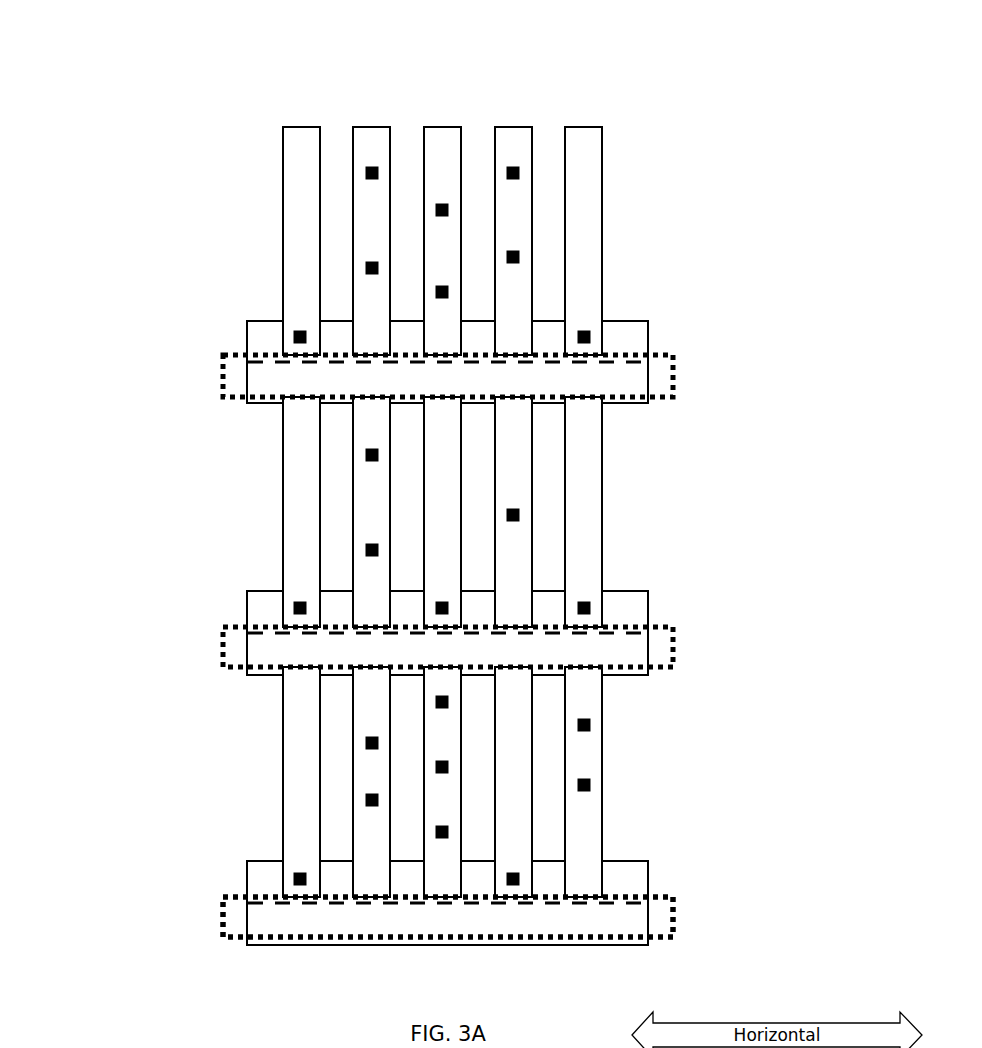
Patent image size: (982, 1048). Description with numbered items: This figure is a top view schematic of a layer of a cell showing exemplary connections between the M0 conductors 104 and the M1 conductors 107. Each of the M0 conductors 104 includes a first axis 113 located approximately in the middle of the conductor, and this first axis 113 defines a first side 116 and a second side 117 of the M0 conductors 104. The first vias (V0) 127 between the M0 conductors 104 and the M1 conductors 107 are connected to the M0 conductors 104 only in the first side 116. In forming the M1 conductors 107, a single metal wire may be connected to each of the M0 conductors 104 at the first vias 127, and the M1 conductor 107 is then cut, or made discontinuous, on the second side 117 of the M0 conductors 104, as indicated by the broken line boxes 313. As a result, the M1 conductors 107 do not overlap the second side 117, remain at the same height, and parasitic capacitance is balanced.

The M0 conductors 104 is at (247, 875).
The M1 conductors 107 is at (583, 127).
The first axis 113 is at (613, 898).
The first side 116 is at (627, 337).
The second side 117 is at (624, 918).
The first vias (V0) 127 is at (296, 328).
The broken line boxes 313 is at (676, 917).